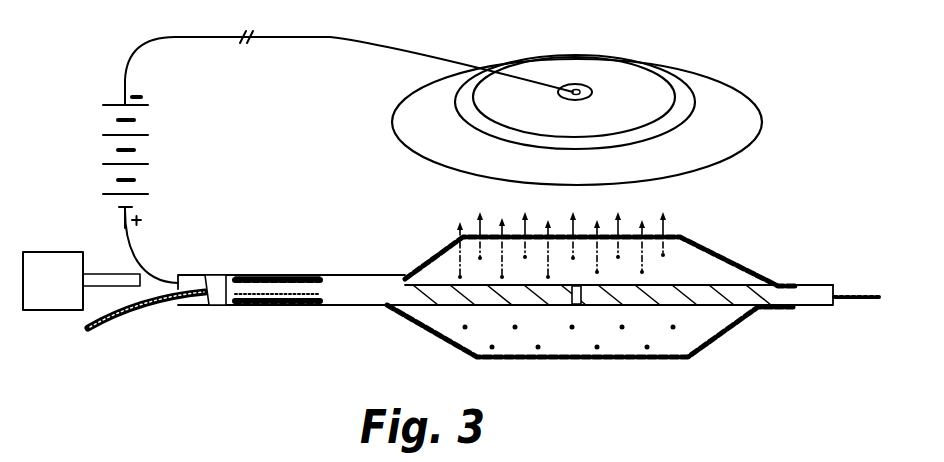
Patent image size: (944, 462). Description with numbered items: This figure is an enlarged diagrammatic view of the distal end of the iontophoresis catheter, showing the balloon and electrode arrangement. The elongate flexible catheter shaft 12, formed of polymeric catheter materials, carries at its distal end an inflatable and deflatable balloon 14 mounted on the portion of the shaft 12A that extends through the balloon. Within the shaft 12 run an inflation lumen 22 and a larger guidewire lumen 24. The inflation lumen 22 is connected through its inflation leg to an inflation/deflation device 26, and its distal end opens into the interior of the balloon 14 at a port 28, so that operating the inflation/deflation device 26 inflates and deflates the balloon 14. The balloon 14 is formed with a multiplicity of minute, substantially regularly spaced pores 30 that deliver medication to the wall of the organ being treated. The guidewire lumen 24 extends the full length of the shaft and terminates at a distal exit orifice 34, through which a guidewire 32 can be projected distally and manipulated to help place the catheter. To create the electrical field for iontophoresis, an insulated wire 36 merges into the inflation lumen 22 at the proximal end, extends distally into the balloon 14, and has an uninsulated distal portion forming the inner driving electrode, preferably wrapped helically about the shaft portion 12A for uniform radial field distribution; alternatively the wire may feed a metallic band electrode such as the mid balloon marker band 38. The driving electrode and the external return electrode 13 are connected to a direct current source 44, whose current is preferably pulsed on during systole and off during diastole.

The catheter shaft 12 is at (223, 297).
The portion of the shaft 12A is at (750, 295).
The external return electrode 13 is at (577, 103).
The balloon 14 is at (727, 337).
The inflation lumen 22 is at (278, 274).
The guidewire lumen 24 is at (306, 304).
The inflation/deflation device 26 is at (81, 281).
The port 28 is at (412, 270).
The pores 30 is at (505, 276).
The guidewire 32 is at (127, 314).
The distal exit orifice 34 is at (850, 322).
The insulated wire 36 is at (140, 254).
The mid balloon marker band 38 is at (578, 305).
The direct current source 44 is at (166, 145).